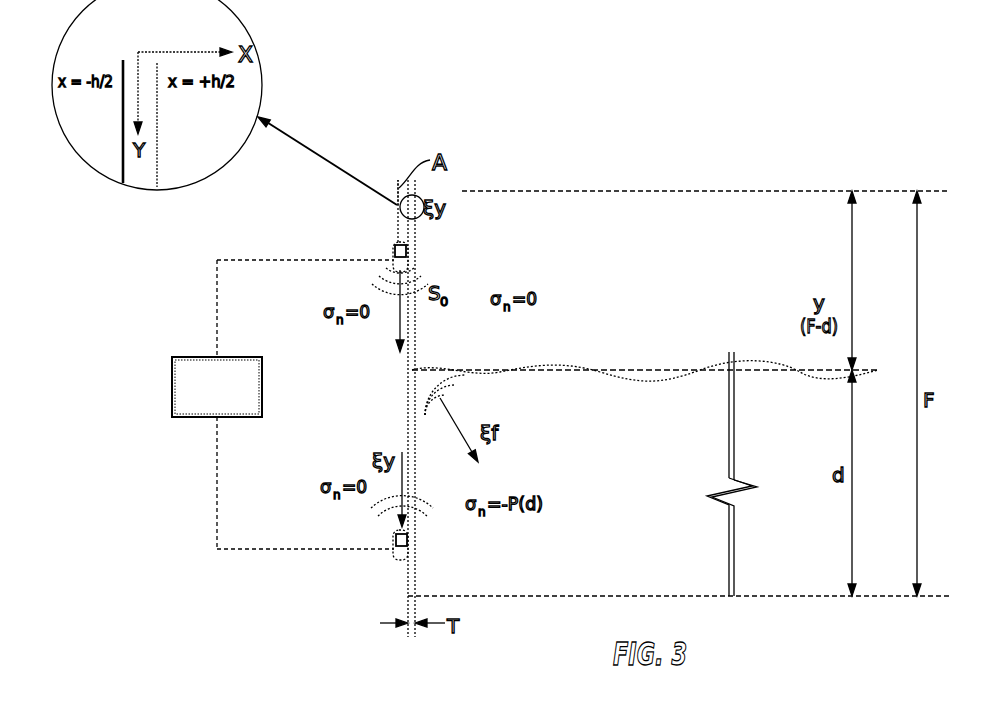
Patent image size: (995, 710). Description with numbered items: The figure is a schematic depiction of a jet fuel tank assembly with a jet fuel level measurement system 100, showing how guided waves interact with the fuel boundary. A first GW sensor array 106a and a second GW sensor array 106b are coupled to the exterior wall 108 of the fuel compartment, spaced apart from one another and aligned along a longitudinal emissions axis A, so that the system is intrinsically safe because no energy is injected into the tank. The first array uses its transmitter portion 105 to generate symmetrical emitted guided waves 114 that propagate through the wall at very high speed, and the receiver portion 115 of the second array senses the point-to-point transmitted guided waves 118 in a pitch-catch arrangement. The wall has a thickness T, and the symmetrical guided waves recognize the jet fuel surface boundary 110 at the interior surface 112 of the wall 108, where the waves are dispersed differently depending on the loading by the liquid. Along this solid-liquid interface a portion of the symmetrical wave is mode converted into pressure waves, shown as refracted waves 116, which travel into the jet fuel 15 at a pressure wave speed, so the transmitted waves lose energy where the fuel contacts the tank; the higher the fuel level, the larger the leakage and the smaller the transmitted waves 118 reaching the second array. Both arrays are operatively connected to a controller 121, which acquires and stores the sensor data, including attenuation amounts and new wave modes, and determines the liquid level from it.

The system 100 is at (802, 145).
The transmitter portion 105 is at (406, 254).
The first GW sensor array 106a is at (390, 246).
The second GW sensor array 106b is at (393, 540).
The exterior wall 108 is at (734, 447).
The jet fuel surface boundary 110 is at (412, 368).
The interior surface 112 is at (416, 236).
The emitted guided waves 114 is at (374, 290).
The receiver portion 115 is at (407, 541).
The refracted waves 116 is at (446, 425).
The transmitted guided waves 118 is at (376, 493).
The controller 121 is at (283, 404).
The jet fuel 15 is at (589, 482).